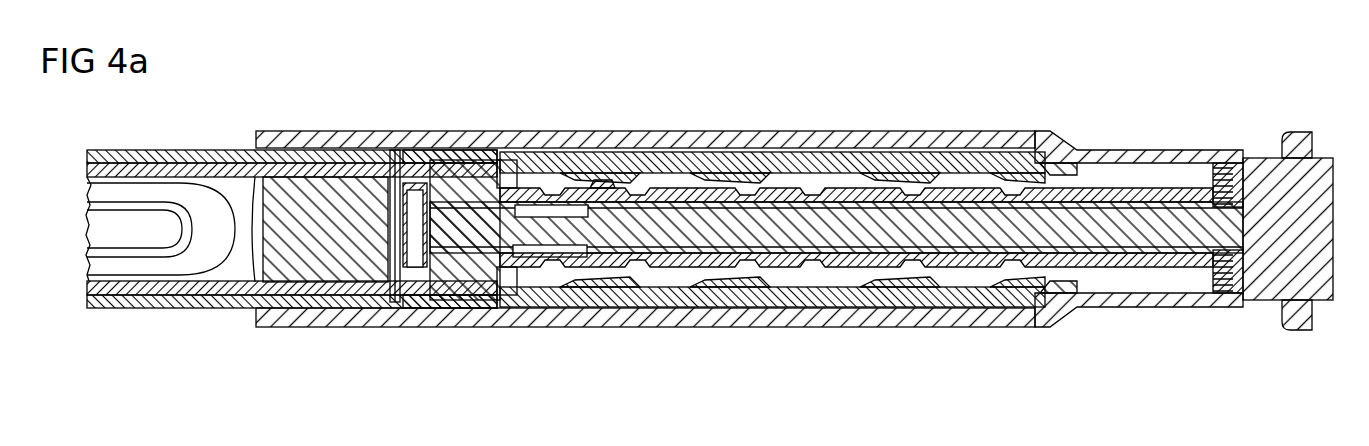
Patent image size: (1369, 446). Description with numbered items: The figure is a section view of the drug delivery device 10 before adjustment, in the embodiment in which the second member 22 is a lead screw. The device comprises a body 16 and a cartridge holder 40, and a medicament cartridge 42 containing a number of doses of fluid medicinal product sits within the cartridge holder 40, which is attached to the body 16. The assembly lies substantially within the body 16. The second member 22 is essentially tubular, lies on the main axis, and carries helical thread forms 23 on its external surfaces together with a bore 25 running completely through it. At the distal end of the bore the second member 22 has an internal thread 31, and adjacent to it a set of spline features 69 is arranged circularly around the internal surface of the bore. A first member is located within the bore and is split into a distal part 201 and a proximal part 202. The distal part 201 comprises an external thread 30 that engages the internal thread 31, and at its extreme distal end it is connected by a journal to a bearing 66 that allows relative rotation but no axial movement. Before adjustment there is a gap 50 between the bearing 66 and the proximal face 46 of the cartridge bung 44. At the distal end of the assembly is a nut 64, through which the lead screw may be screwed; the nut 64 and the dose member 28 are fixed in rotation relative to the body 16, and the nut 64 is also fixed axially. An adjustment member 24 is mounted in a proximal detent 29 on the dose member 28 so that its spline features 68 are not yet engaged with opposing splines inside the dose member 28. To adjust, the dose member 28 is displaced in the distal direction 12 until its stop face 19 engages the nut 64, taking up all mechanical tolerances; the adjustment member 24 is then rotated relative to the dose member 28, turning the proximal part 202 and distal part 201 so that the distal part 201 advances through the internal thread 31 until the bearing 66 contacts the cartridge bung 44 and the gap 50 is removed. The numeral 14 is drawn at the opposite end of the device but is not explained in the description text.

The drug delivery device 10 is at (712, 99).
The distal direction 12 is at (115, 228).
The distal end 14 is at (1368, 228).
The body 16 is at (638, 318).
The stop face 19 is at (1043, 313).
The second member 22 is at (987, 266).
The helical thread forms 23 is at (780, 188).
The adjustment member 24 is at (1317, 280).
The bore 25 is at (883, 187).
The dose member 28 is at (1058, 310).
The proximal detent 29 is at (1295, 138).
The external thread 30 is at (488, 177).
The internal thread 31 is at (503, 187).
The cartridge holder 40 is at (238, 160).
The medicament cartridge 42 is at (183, 157).
The cartridge bung 44 is at (302, 267).
The proximal face 46 is at (388, 163).
The gap 50 is at (457, 355).
The nut 64 is at (493, 327).
The bearing 66 is at (423, 157).
The spline features 68 is at (1227, 160).
The spline features 69 is at (600, 188).
The distal part 201 is at (558, 290).
The proximal part 202 is at (812, 262).